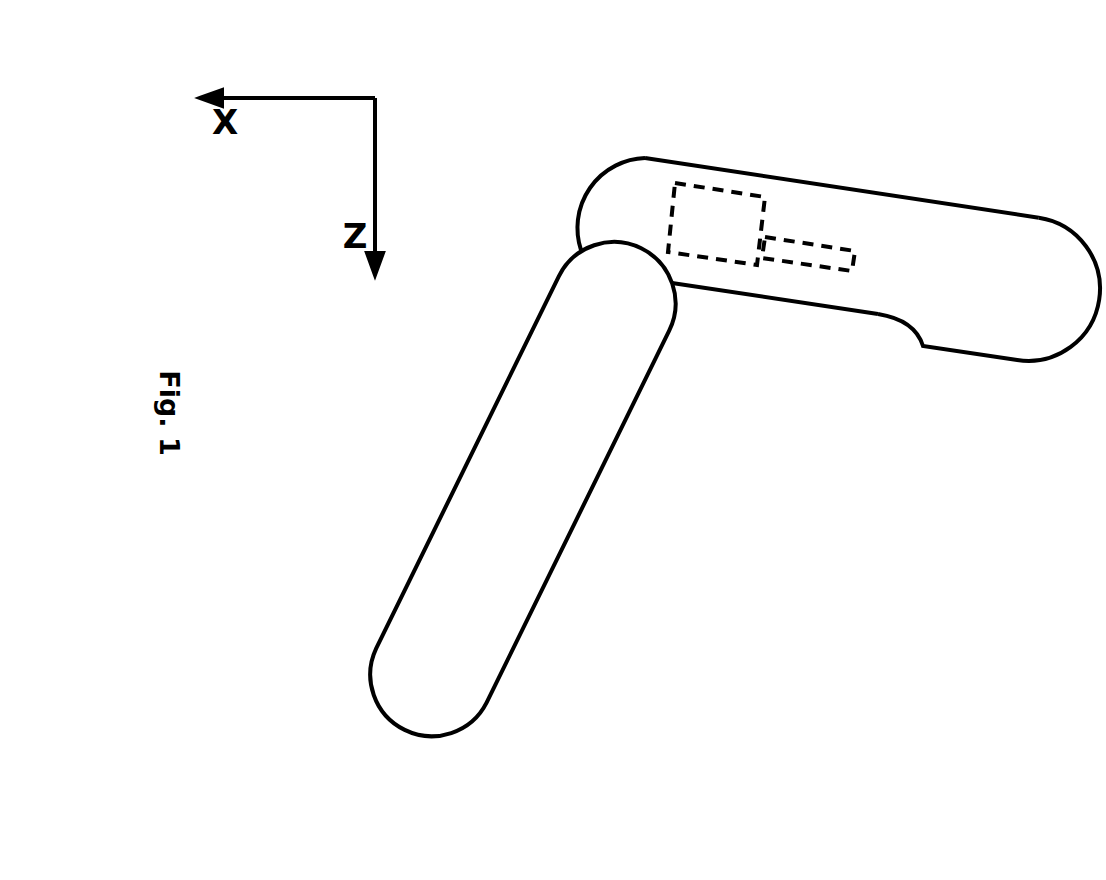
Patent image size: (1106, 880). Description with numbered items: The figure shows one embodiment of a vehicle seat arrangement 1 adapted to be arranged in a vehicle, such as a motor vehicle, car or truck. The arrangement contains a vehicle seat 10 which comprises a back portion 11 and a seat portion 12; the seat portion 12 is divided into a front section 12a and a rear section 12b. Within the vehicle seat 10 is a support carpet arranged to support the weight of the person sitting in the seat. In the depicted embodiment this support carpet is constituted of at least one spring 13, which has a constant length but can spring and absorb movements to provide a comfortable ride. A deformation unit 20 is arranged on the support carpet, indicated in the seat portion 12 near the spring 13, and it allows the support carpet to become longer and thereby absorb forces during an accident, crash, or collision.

The vehicle seat arrangement 1 is at (958, 660).
The vehicle seat 10 is at (667, 415).
The back portion 11 is at (488, 697).
The seat portion 12 is at (883, 193).
The front section 12a is at (1000, 362).
The rear section 12b is at (767, 297).
The spring 13 is at (826, 246).
The deformation unit 20 is at (686, 183).